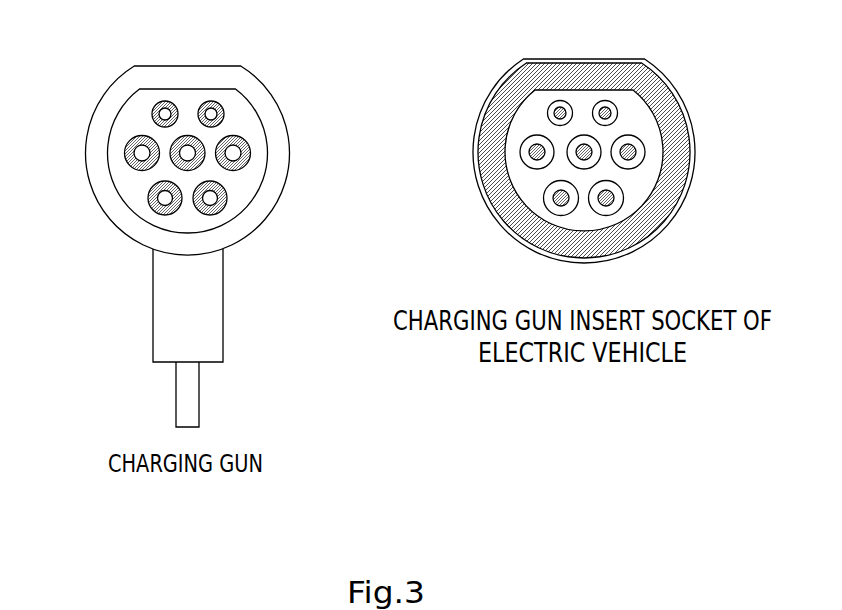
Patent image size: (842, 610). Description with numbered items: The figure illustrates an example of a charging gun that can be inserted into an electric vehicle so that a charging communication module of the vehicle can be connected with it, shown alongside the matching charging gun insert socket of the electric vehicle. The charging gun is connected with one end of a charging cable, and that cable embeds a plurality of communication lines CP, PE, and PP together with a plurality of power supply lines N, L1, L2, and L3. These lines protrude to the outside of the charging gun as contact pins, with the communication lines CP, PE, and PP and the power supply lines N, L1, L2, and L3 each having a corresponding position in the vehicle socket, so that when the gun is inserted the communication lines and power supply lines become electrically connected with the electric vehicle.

The communication line CP is at (165, 113).
The communication line PP is at (211, 113).
The communication line PE is at (188, 152).
The power supply line N is at (142, 152).
The power supply line L1 is at (233, 152).
The power supply line L2 is at (210, 198).
The power supply line L3 is at (165, 198).